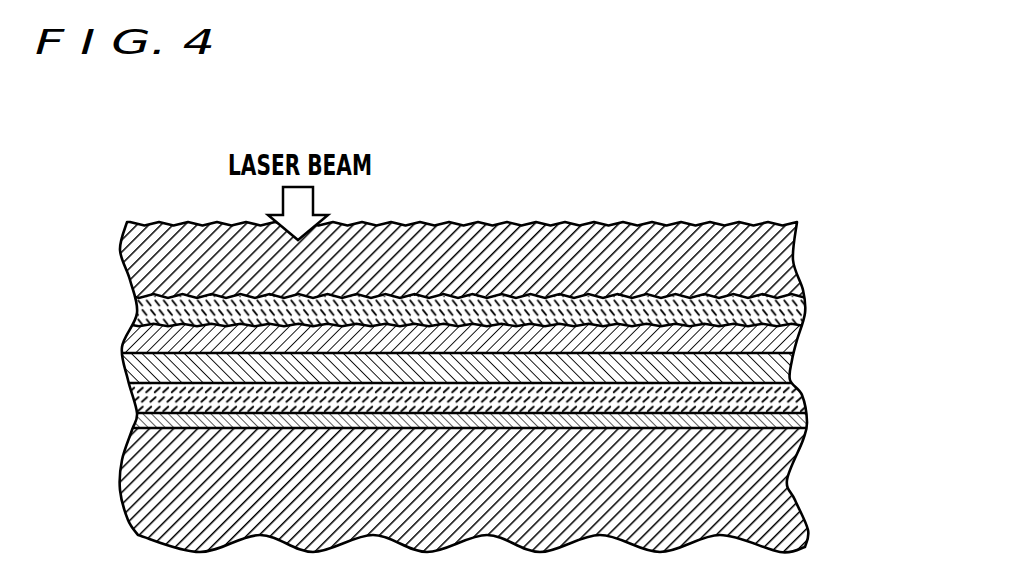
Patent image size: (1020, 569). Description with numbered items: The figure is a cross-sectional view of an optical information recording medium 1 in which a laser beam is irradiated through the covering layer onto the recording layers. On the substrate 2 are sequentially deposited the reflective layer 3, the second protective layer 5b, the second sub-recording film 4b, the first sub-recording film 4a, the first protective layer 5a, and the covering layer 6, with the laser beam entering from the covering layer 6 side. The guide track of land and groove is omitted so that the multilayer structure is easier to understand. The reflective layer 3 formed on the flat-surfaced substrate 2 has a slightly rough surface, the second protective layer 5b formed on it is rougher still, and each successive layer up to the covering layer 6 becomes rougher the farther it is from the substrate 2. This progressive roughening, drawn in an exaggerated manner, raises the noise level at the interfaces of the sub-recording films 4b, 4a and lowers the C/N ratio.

The optical information recording medium 1 is at (575, 175).
The substrate 2 is at (787, 478).
The reflective layer 3 is at (805, 418).
The first sub-recording film 4a is at (794, 344).
The second sub-recording film 4b is at (791, 369).
The first protective layer 5a is at (803, 313).
The second protective layer 5b is at (802, 396).
The covering layer 6 is at (795, 262).